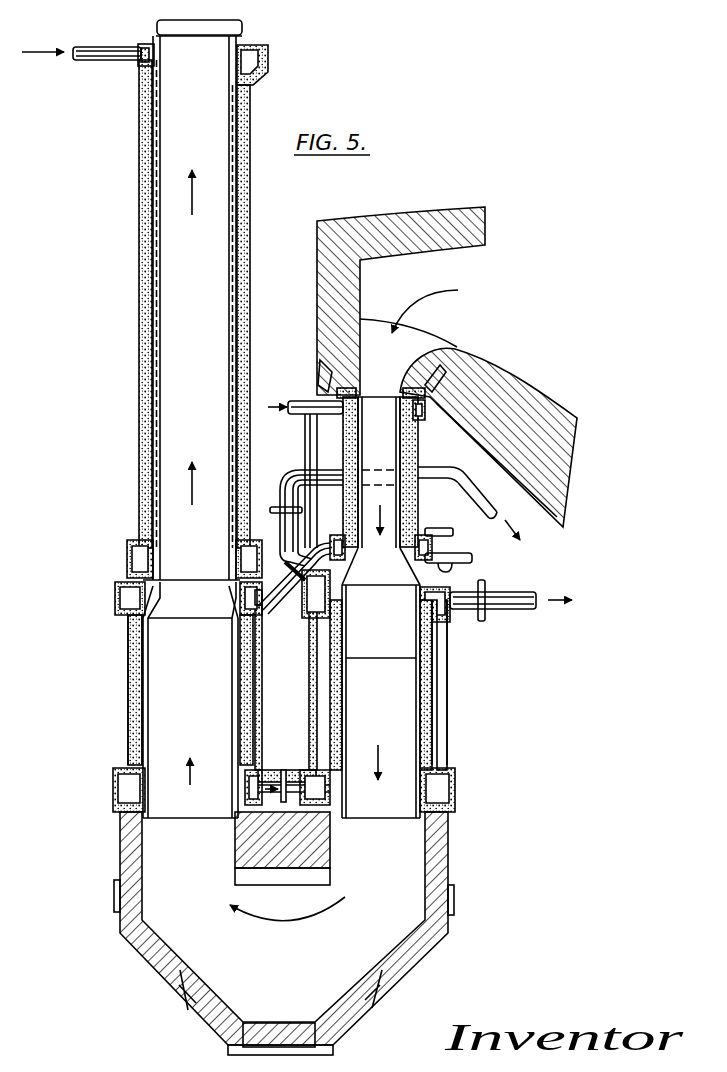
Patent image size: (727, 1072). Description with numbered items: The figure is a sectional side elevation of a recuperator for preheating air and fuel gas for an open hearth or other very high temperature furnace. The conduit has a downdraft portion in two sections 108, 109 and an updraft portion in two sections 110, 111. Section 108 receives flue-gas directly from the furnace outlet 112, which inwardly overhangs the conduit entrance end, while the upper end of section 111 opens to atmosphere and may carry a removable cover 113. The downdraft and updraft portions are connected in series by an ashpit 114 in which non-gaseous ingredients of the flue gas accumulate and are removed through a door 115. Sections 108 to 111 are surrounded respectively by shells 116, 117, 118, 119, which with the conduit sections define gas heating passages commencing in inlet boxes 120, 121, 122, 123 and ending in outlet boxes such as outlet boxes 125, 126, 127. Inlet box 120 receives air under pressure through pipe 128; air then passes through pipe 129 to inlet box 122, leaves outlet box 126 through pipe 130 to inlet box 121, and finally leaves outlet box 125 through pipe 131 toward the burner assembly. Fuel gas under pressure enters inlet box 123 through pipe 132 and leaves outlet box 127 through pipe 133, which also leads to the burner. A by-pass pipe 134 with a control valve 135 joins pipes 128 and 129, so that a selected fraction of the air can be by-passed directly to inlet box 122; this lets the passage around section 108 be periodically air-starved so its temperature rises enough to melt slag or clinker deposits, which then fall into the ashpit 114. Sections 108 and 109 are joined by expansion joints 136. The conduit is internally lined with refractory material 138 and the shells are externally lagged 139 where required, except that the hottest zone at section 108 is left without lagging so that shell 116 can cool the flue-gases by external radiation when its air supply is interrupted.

The down draft conduit section 108 is at (381, 486).
The down draft conduit section 109 is at (381, 701).
The updraft conduit section 110 is at (190, 700).
The updraft conduit section 111 is at (191, 308).
The furnace outlet 112 is at (388, 390).
The removable cover 113 is at (242, 22).
The ashpit 114 is at (284, 933).
The door 115 is at (279, 1035).
The shell 116 is at (418, 455).
The shell 117 is at (447, 706).
The shell 118 is at (128, 705).
The shell 119 is at (153, 415).
The inlet box 120 is at (425, 408).
The inlet box 121 is at (455, 789).
The inlet box 122 is at (115, 605).
The inlet box 123 is at (268, 62).
The outlet box 125 is at (452, 617).
The outlet box 126 is at (113, 785).
The outlet box 127 is at (127, 553).
The pipe 128 is at (300, 401).
The pipe 129 is at (285, 606).
The pipe 130 is at (285, 770).
The pipe 131 is at (528, 610).
The pipe 132 is at (130, 62).
The pipe 133 is at (470, 500).
The by-pass pipe 134 is at (305, 428).
The control valve 135 is at (310, 446).
The expansion joints 136 is at (455, 573).
The refractory material 138 is at (348, 545).
The external lagging 139 is at (139, 372).